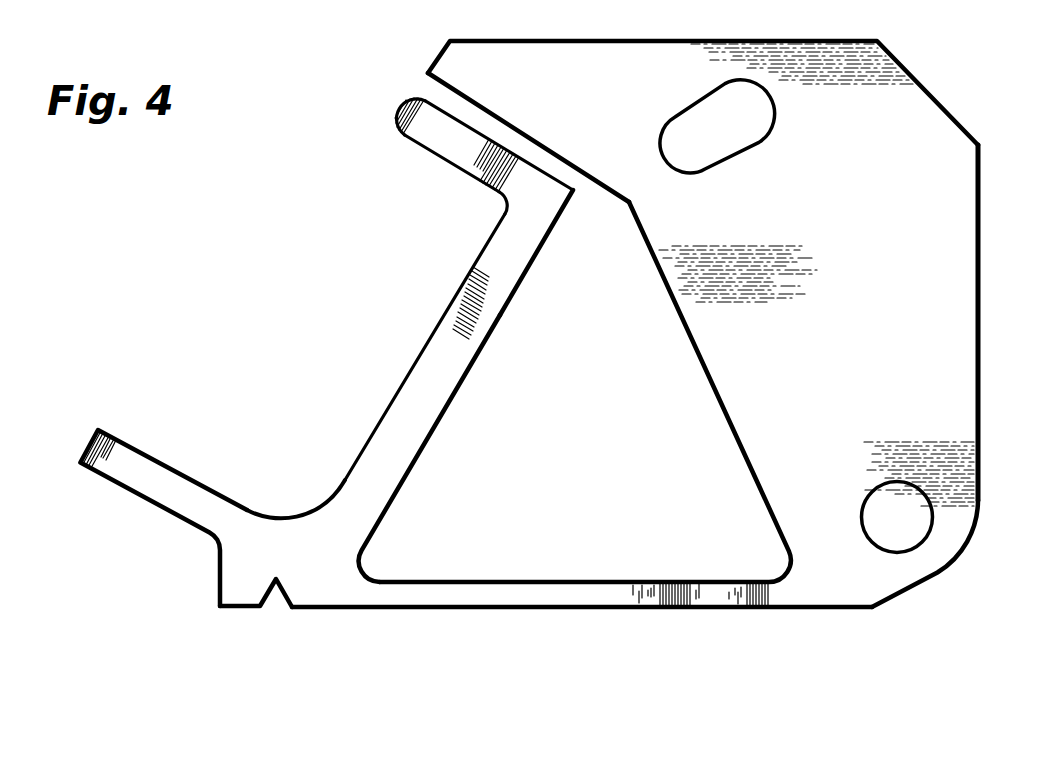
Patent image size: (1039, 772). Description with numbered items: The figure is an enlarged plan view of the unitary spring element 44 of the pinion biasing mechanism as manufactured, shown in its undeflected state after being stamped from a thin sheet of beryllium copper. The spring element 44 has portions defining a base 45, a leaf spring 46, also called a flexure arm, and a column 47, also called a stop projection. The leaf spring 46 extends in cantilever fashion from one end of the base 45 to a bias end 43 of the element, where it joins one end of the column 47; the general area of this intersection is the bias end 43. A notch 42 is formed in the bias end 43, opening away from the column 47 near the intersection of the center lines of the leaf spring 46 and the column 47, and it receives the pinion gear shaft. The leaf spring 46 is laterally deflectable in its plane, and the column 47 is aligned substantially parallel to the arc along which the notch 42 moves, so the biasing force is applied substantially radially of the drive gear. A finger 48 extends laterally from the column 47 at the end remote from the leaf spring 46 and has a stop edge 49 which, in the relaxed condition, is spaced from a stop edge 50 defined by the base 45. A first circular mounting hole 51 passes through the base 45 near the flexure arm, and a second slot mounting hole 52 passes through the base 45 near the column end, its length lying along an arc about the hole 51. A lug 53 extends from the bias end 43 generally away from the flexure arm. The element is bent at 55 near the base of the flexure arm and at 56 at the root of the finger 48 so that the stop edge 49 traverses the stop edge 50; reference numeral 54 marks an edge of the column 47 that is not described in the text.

The notch 42 is at (267, 598).
The bias end 43 is at (278, 543).
The spring element 44 is at (956, 217).
The base 45 is at (960, 375).
The leaf spring 46 is at (538, 600).
The column 47 is at (457, 368).
The finger 48 is at (440, 145).
The stop edge 49 is at (438, 98).
The stop edge 50 is at (462, 102).
The first circular mounting hole 51 is at (905, 545).
The second slot mounting hole 52 is at (712, 100).
The lug 53 is at (172, 480).
The edge of inclined arm 54 is at (543, 212).
The bend 55 is at (760, 581).
The bend 56 is at (489, 188).